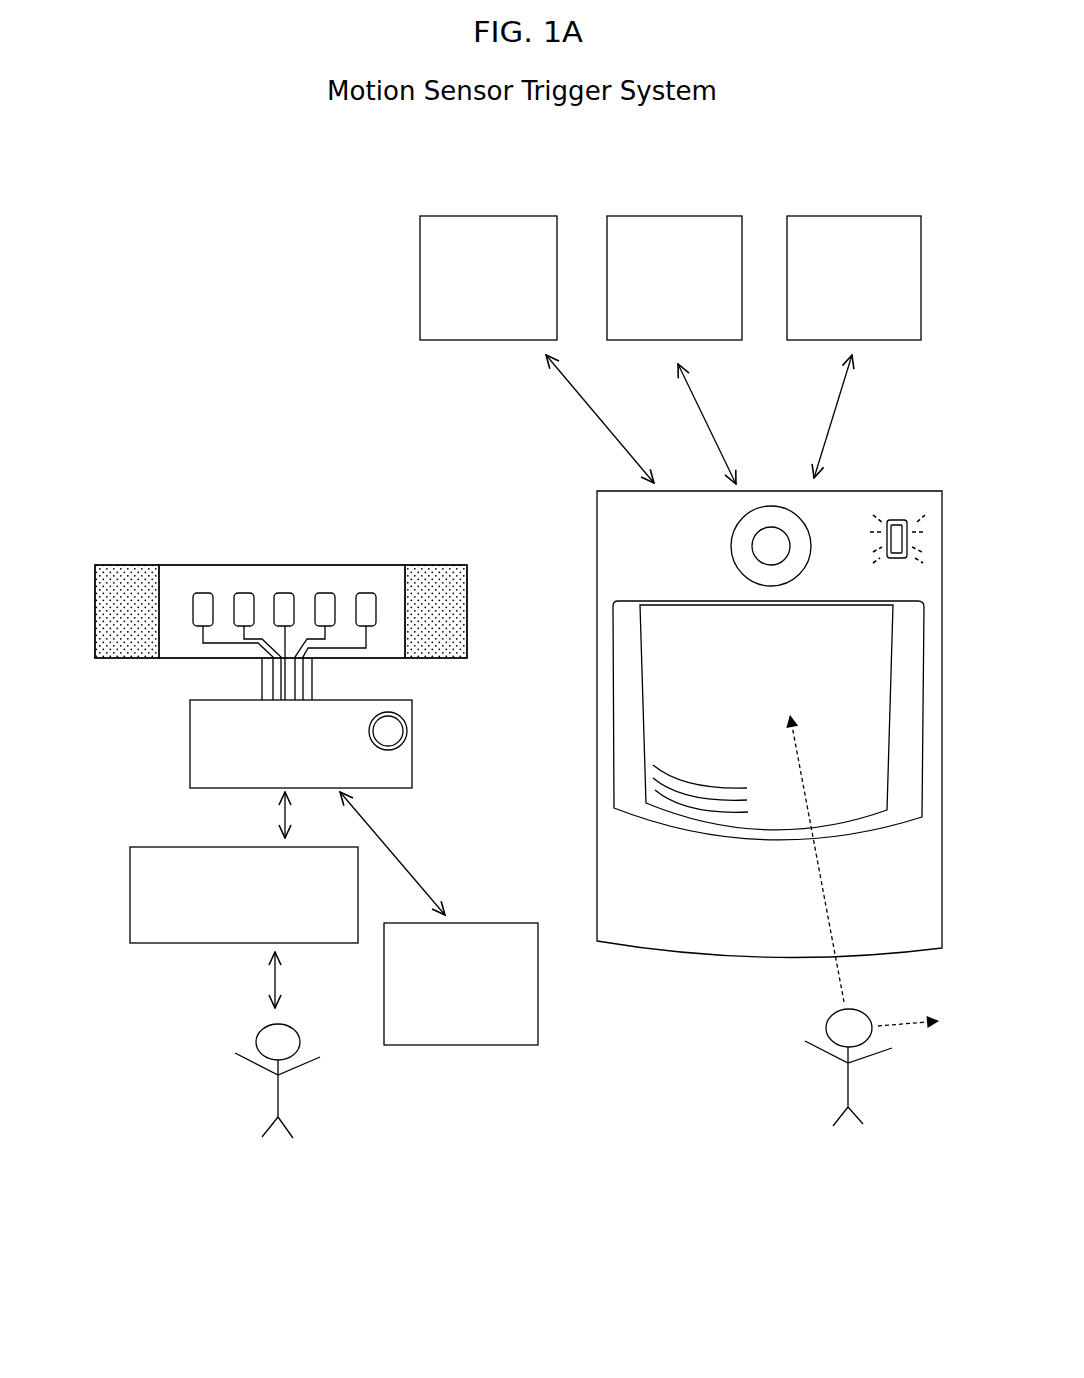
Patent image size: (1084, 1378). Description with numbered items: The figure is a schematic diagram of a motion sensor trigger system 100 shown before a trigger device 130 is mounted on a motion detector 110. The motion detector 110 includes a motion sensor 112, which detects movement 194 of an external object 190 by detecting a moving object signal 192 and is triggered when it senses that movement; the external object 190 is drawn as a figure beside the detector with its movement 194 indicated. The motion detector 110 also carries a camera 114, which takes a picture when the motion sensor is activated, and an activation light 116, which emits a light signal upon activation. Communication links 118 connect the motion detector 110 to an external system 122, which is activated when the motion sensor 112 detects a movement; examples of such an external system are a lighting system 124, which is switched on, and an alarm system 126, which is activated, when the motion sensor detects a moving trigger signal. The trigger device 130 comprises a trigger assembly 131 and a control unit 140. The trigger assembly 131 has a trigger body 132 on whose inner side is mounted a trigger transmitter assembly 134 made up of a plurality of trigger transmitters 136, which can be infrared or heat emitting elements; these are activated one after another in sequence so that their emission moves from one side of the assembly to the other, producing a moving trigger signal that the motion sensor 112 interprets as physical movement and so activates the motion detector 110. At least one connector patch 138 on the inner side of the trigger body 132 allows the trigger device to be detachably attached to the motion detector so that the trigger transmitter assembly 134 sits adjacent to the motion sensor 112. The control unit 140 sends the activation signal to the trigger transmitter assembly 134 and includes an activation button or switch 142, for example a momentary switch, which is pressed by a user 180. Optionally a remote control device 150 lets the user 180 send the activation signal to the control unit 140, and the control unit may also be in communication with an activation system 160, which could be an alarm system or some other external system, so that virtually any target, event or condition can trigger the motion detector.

The motion sensor trigger system 100 is at (213, 250).
The motion detector 110 is at (633, 970).
The motion sensor 112 is at (847, 767).
The camera 114 is at (765, 546).
The activation light 116 is at (898, 517).
The communication links 118 is at (580, 419).
The external system 122 is at (433, 213).
The lighting system 124 is at (643, 213).
The alarm system 126 is at (820, 213).
The trigger device 130 is at (271, 564).
The trigger assembly 131 is at (158, 548).
The trigger body 132 is at (180, 661).
The trigger transmitter assembly 134 is at (314, 541).
The trigger transmitters 136 is at (205, 591).
The connector patch 138 is at (130, 642).
The control unit 140 is at (297, 757).
The activation button/switch 142 is at (398, 738).
The remote control device 150 is at (183, 952).
The activation system 160 is at (487, 913).
The user 180 is at (263, 1095).
The external object 190 is at (833, 1084).
The moving object signal 192 is at (816, 884).
The movement 194 is at (897, 1019).